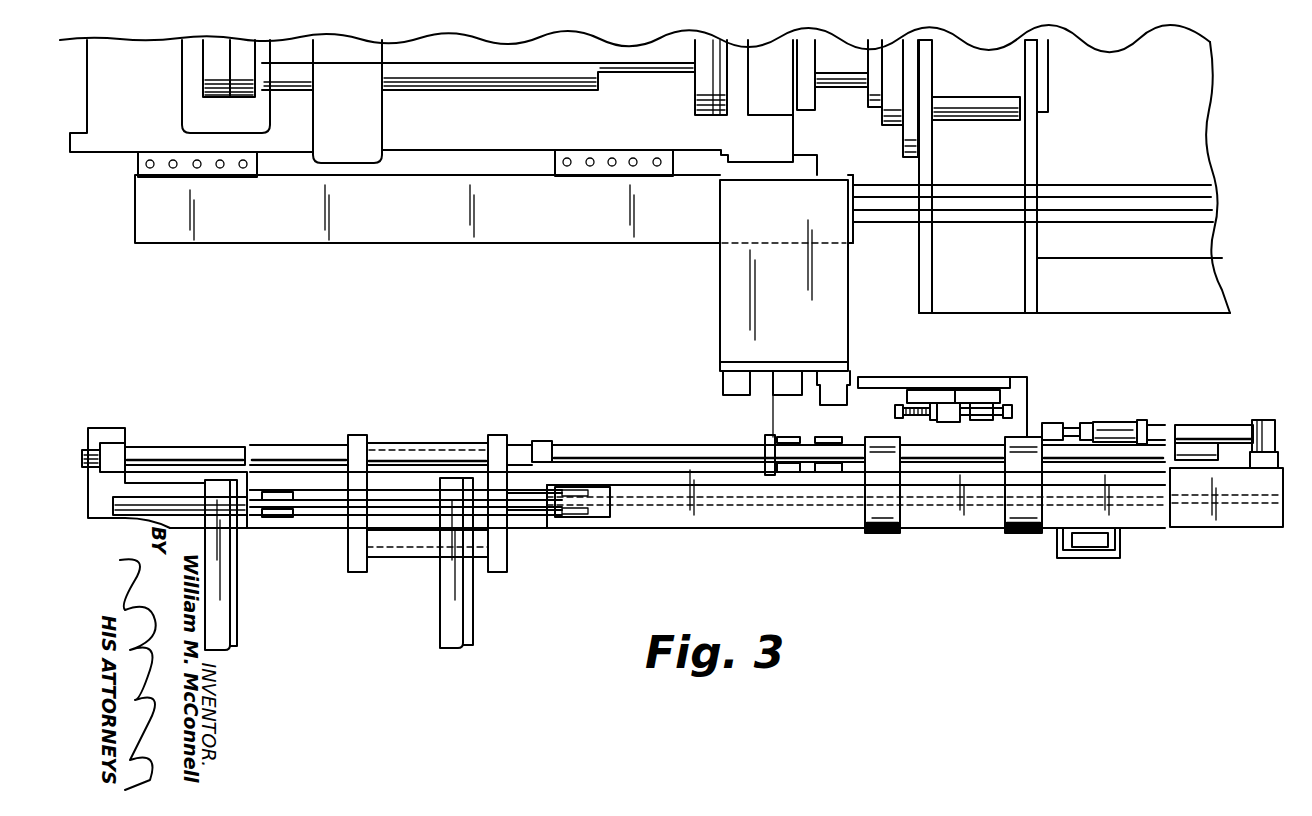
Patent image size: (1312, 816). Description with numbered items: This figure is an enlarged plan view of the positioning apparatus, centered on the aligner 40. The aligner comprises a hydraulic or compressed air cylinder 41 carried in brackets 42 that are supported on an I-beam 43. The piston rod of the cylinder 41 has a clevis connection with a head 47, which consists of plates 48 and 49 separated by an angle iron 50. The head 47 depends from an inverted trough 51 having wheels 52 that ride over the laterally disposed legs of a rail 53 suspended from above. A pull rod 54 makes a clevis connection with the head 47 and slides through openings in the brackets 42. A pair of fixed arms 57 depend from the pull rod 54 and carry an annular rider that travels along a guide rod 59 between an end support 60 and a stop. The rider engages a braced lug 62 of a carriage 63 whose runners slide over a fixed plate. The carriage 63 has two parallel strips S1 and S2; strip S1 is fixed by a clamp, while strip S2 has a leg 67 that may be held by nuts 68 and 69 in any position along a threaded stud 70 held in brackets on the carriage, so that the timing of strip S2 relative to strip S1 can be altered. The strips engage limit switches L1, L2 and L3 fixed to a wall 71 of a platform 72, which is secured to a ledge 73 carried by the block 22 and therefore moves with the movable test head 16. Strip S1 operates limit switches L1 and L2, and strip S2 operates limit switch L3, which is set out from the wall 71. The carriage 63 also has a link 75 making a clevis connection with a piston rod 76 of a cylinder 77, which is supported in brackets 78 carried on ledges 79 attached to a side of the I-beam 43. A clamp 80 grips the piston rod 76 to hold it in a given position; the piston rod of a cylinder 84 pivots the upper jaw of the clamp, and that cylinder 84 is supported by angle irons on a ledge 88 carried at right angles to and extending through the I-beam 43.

The test head 16 is at (241, 98).
The block 22 is at (500, 90).
The ledge 73 is at (560, 243).
The platform 72 is at (849, 290).
The wall 71 is at (850, 366).
The limit switch L1 is at (722, 388).
The limit switch L2 is at (800, 396).
The limit switch L3 is at (828, 405).
The strip S1 is at (955, 388).
The strip S2 is at (976, 390).
The carriage 63 is at (1027, 394).
The threaded stud 70 is at (897, 416).
The nut 68 is at (932, 421).
The leg 67 is at (951, 423).
The nut 69 is at (976, 422).
The link 75 is at (1048, 425).
The piston rod 76 is at (1085, 423).
The clamp 80 is at (1134, 411).
The cylinder 77 is at (1196, 428).
The bracket 78 is at (1263, 422).
The ledge 79 is at (1242, 448).
The end support 60 is at (112, 443).
The guide rod 59 is at (195, 447).
The plate 48 is at (350, 440).
The head 47 is at (410, 460).
The plate 49 is at (498, 440).
The pull rod 54 is at (595, 447).
The braced lug 62 is at (765, 445).
The I-beam 43 is at (125, 525).
The wheel 52 is at (278, 501).
The inverted trough 51 is at (315, 516).
The angle iron 50 is at (415, 557).
The rail 53 is at (530, 511).
The aligner 40 is at (676, 528).
The cylinder 41 is at (756, 520).
The fixed arm 57 is at (826, 473).
The bracket 42 is at (876, 535).
The cylinder 84 is at (1098, 548).
The ledge 88 is at (1120, 546).